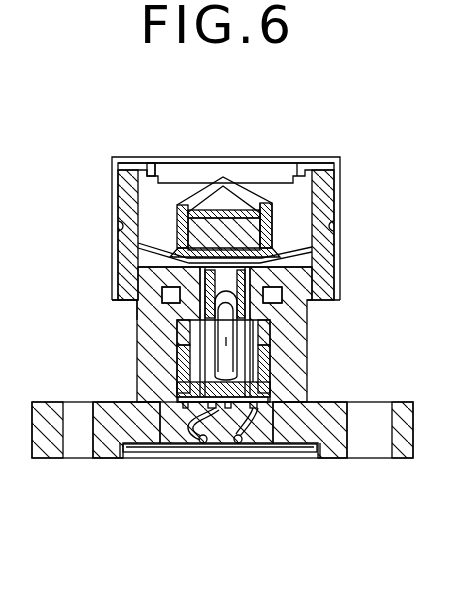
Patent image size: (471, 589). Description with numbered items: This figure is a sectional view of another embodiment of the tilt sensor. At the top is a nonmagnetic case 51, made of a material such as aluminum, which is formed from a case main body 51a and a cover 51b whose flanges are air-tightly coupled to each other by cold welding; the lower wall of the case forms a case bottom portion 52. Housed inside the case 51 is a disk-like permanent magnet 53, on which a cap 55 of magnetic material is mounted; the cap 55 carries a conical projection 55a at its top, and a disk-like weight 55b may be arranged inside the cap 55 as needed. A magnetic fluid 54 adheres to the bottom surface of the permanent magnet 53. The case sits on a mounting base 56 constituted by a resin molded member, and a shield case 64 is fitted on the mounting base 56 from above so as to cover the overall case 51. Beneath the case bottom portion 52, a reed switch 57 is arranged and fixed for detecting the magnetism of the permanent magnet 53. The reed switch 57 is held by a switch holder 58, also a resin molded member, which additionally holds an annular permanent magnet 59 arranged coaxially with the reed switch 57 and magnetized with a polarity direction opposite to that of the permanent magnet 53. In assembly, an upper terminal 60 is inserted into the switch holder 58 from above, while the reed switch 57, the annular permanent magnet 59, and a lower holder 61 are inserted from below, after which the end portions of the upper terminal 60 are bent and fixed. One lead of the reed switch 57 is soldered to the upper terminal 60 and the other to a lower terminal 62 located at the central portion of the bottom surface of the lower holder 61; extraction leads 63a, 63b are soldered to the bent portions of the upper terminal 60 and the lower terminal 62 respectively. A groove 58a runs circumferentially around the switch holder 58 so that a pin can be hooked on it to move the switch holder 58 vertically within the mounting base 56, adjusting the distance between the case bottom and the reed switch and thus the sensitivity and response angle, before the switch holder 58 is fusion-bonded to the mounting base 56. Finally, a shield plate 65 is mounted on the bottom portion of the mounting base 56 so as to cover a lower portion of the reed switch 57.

The nonmagnetic case 51 is at (322, 200).
The case main body 51a is at (136, 190).
The cover 51b is at (158, 164).
The case bottom portion 52 is at (300, 256).
The disk-like permanent magnet 53 is at (256, 184).
The magnetic fluid 54 is at (277, 245).
The cap 55 is at (190, 203).
The conical projection 55a is at (237, 210).
The disk-like weight 55b is at (188, 213).
The mounting base 56 is at (302, 320).
The reed switch 57 is at (240, 357).
The switch holder 58 is at (168, 328).
The groove 58a is at (136, 298).
The annular permanent magnet 59 is at (172, 352).
The upper terminal 60 is at (183, 277).
The lower holder 61 is at (176, 406).
The lower terminal 62 is at (233, 413).
The extraction lead 63a is at (262, 410).
The extraction lead 63b is at (189, 410).
The shield case 64 is at (338, 212).
The shield plate 65 is at (302, 453).